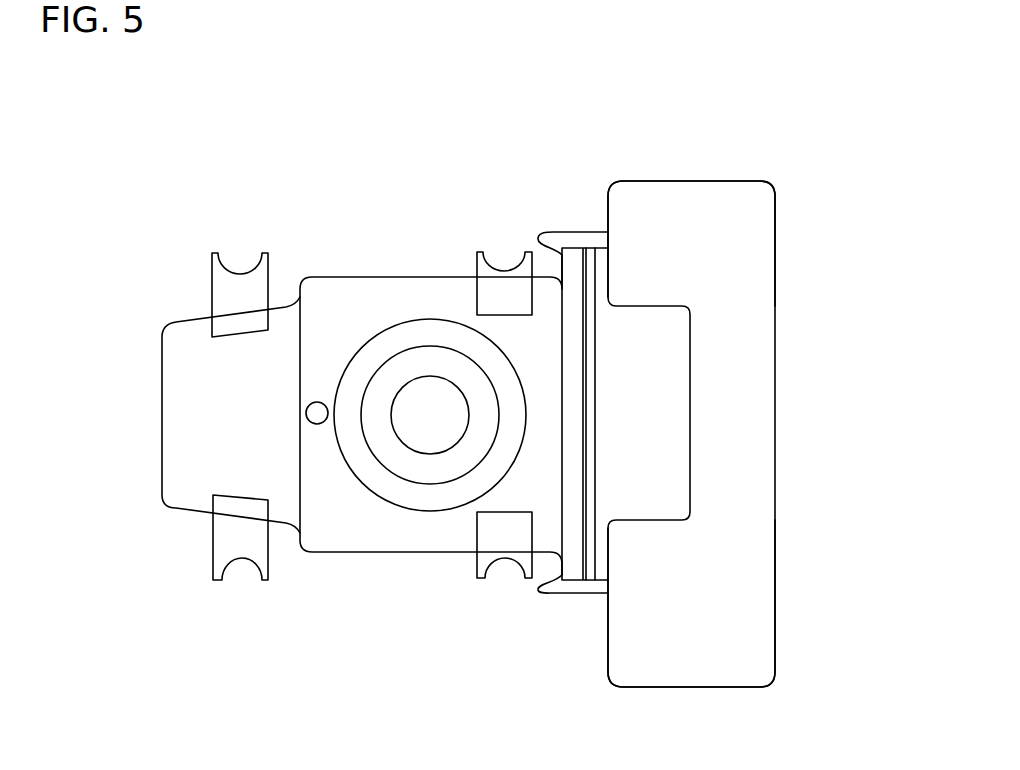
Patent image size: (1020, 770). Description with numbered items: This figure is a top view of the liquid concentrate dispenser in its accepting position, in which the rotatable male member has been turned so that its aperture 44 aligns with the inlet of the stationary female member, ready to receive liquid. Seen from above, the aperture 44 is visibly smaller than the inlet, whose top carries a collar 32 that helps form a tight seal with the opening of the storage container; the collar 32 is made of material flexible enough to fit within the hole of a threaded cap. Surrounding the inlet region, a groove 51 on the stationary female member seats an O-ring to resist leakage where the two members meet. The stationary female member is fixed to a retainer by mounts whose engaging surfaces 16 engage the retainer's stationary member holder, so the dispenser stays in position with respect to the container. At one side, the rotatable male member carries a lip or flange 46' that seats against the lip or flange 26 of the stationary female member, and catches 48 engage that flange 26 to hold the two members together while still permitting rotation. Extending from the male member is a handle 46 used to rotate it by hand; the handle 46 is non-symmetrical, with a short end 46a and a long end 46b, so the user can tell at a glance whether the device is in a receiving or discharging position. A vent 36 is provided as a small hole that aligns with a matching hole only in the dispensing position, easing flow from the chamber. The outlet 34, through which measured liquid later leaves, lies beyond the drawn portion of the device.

The engaging surfaces 16 is at (243, 272).
The lip or flange 26 is at (573, 580).
The collar 32 is at (436, 346).
The outlet 34 is at (524, 0).
The vent 36 is at (308, 408).
The aperture 44 is at (421, 452).
The handle 46 is at (740, 420).
The short end 46a is at (772, 185).
The long end 46b is at (775, 680).
The lip or flange 46' is at (583, 475).
The catches 48 is at (543, 592).
The groove 51 is at (372, 483).